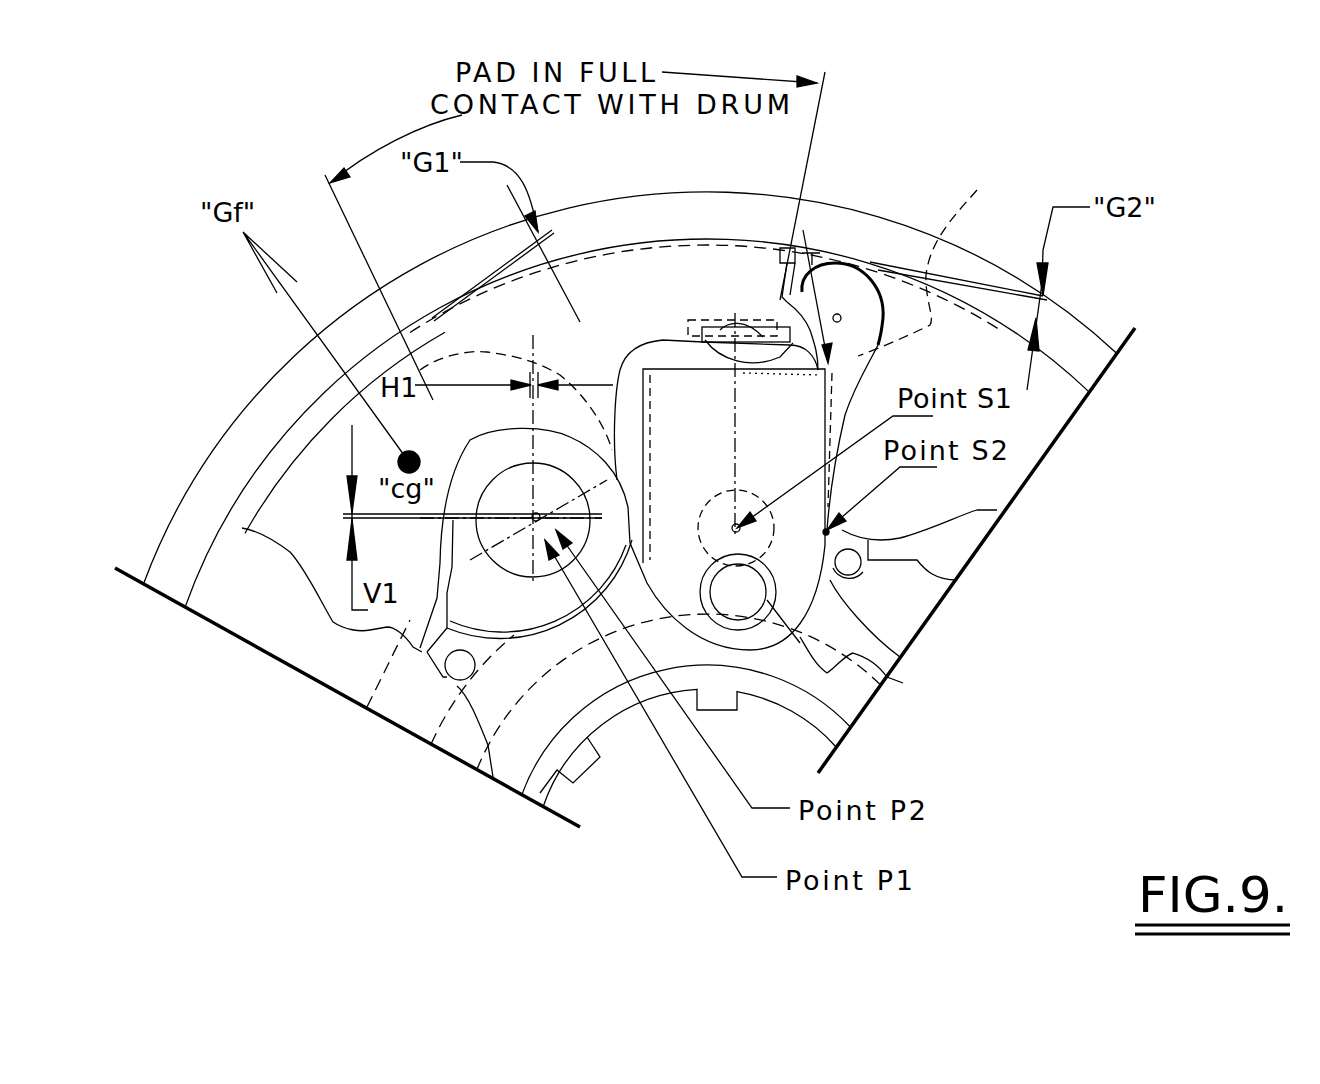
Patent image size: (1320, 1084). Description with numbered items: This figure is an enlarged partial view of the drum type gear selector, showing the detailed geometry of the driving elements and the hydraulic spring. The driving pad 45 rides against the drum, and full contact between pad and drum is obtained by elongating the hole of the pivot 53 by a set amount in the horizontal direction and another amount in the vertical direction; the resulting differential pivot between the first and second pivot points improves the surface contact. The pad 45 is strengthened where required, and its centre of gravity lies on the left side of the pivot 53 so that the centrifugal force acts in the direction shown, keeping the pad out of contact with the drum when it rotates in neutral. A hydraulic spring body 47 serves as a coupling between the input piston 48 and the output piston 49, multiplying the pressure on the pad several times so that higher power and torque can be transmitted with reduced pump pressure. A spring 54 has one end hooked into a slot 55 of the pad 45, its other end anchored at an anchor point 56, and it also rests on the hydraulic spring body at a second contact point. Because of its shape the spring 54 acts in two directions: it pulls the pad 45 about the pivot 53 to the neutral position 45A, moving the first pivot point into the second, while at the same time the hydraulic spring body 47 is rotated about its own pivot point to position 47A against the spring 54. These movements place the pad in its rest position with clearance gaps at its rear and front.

The driving pad 45 is at (287, 468).
The neutral position of driving pad 45A is at (827, 303).
The hydraulic spring body 47 is at (840, 377).
The rotated position of hydraulic spring body 47A is at (933, 266).
The input piston 48 is at (768, 608).
The output piston 49 is at (720, 327).
The pivot 53 is at (497, 563).
The spring 54 is at (885, 356).
The slot 55 is at (788, 250).
The anchor point 56 is at (862, 562).